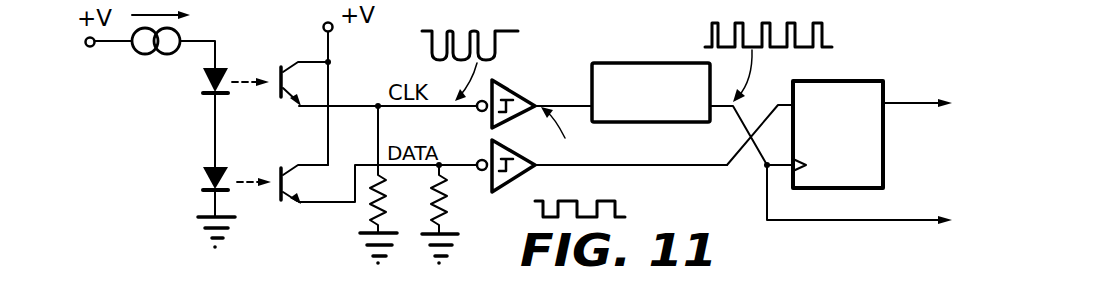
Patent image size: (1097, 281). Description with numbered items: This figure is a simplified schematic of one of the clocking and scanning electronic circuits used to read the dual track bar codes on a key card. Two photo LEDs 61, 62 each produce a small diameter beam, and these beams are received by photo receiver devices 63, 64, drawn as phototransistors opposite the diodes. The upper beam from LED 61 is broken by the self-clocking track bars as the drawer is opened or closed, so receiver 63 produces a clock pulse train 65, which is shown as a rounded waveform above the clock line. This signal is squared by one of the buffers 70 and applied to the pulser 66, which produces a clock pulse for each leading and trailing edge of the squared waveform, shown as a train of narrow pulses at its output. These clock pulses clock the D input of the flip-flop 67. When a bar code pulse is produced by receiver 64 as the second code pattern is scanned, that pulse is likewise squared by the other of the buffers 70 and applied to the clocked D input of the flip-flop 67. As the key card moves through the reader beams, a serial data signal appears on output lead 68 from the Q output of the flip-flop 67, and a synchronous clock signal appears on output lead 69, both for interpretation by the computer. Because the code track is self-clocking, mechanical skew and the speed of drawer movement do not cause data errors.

The photo LED 61 is at (205, 103).
The photo LED 62 is at (203, 172).
The photo receiver device 63 is at (277, 78).
The photo receiver device 64 is at (283, 194).
The clock pulse train 65 is at (510, 34).
The pulser 66 is at (655, 62).
The flip-flop 67 is at (848, 55).
The output lead 68 is at (903, 103).
The output lead 69 is at (910, 222).
The buffers 70 is at (528, 188).